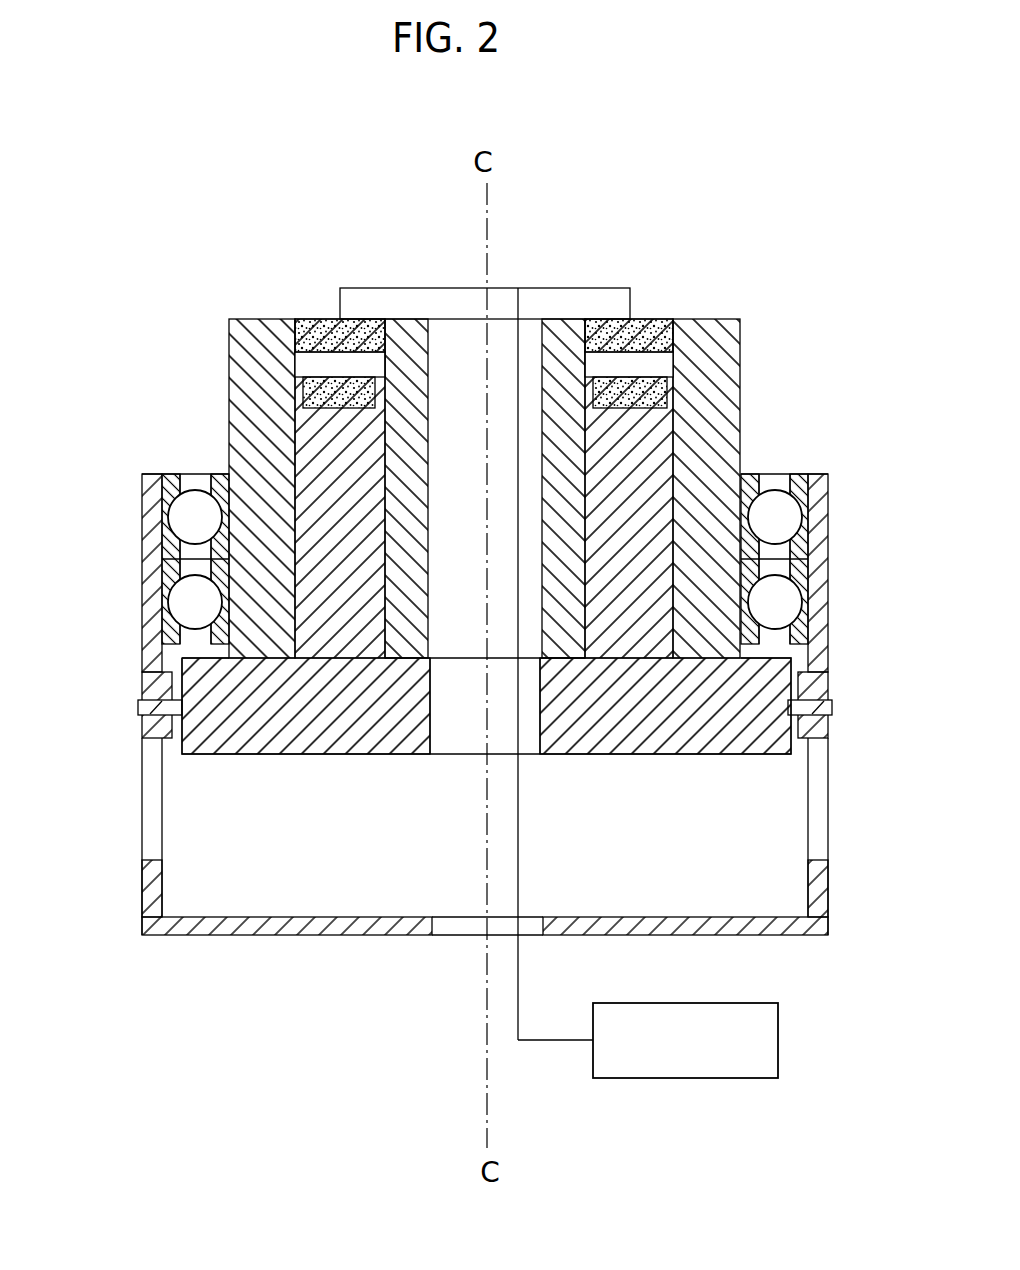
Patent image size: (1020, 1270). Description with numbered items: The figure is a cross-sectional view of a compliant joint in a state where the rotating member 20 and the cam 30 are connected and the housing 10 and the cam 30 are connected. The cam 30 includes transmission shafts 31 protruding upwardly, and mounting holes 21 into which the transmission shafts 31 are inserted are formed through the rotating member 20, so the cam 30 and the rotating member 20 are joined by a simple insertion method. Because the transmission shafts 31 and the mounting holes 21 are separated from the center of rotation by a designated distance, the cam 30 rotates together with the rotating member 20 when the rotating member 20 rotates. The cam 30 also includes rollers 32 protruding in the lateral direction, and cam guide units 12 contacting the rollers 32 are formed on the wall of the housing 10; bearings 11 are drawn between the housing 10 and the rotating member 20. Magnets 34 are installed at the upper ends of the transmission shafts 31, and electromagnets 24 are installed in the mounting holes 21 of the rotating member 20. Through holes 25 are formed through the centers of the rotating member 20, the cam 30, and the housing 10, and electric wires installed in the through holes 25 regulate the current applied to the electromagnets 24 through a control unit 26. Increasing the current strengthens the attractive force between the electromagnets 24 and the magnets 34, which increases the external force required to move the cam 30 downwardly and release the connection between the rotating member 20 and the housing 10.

The housing 10 is at (822, 497).
The bearing 11 is at (193, 515).
The cam guide units 12 is at (152, 777).
The rotating member 20 is at (728, 380).
The mounting holes 21 is at (663, 355).
The electromagnets 24 is at (320, 332).
The through holes 25 is at (452, 350).
The control unit 26 is at (780, 1040).
The cam 30 is at (247, 762).
The transmission shafts 31 is at (657, 453).
The rollers 32 is at (145, 682).
The magnets 34 is at (320, 385).